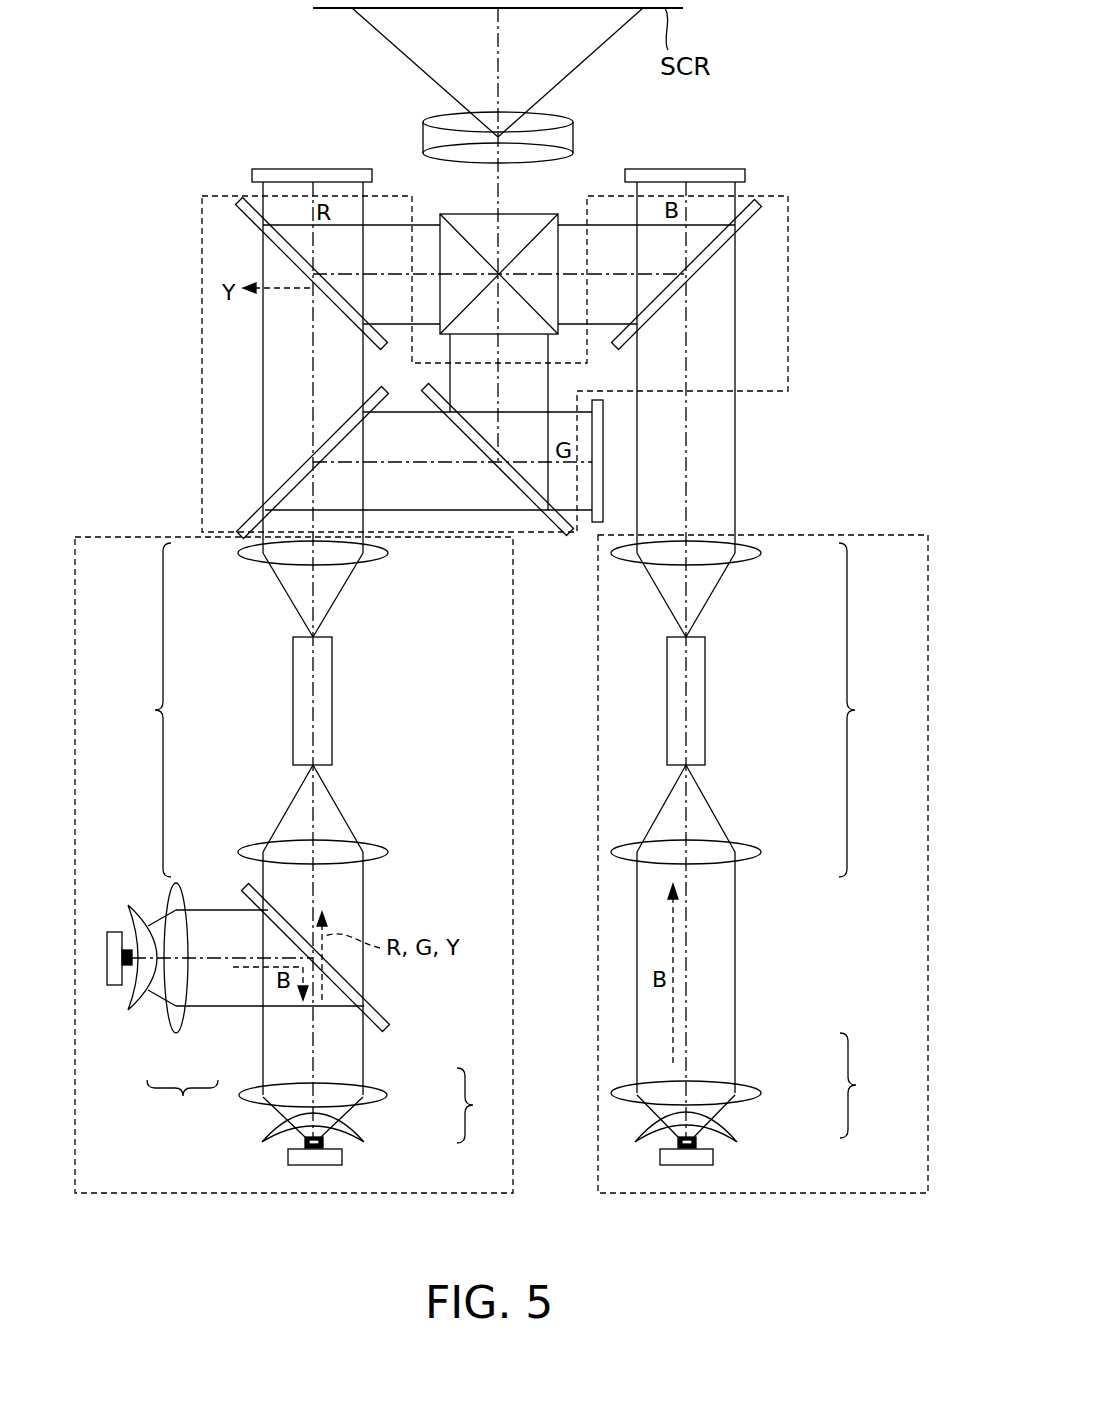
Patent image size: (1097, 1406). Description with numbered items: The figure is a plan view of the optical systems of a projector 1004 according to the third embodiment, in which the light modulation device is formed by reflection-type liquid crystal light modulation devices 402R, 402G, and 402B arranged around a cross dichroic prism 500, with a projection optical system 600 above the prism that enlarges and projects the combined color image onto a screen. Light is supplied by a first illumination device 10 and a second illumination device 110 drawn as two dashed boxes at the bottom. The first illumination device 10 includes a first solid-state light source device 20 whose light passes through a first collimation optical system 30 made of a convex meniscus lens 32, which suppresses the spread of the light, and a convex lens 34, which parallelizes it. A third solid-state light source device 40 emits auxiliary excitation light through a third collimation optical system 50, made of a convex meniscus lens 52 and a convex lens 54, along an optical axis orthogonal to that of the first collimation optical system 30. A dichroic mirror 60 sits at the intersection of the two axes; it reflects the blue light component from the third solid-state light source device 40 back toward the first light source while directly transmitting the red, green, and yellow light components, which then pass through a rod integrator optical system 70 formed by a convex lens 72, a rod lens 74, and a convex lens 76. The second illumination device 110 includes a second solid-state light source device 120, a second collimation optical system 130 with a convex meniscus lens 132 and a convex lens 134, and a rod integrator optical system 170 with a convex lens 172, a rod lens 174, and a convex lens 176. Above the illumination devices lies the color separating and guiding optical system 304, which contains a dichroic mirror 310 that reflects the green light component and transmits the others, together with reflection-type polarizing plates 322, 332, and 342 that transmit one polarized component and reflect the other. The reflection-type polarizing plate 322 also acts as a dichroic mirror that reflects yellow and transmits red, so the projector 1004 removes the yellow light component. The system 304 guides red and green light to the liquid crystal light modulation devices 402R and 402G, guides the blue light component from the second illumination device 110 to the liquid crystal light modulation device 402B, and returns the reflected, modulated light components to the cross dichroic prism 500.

The projector 1004 is at (877, 24).
The projection optical system 600 is at (423, 130).
The reflection-type liquid crystal light modulation device 402R is at (270, 168).
The reflection-type liquid crystal light modulation device 402B is at (676, 168).
The reflection-type liquid crystal light modulation device 402G is at (600, 522).
The cross dichroic prism 500 is at (525, 213).
The color separating and guiding optical system 304 is at (202, 360).
The reflection-type polarizing plate 322 is at (245, 212).
The reflection-type polarizing plate 342 is at (748, 228).
The dichroic mirror 310 is at (243, 520).
The reflection-type polarizing plate 332 is at (540, 520).
The first illumination device 10 is at (197, 1195).
The second illumination device 110 is at (728, 1195).
The rod integrator optical system 70 is at (250, 709).
The convex lens 76 is at (238, 554).
The rod lens 74 is at (293, 680).
The convex lens 72 is at (238, 852).
The rod integrator optical system 170 is at (760, 709).
The convex lens 176 is at (763, 553).
The rod lens 174 is at (706, 680).
The convex lens 172 is at (763, 852).
The dichroic mirror 60 is at (388, 1008).
The third solid-state light source device 40 is at (119, 1003).
The third collimation optical system 50 is at (175, 1005).
The convex meniscus lens 52 is at (140, 1007).
The convex lens 54 is at (178, 1033).
The first collimation optical system 30 is at (374, 1107).
The convex lens 34 is at (389, 1093).
The convex meniscus lens 32 is at (362, 1128).
The first solid-state light source device 20 is at (268, 1156).
The second collimation optical system 130 is at (761, 1089).
The convex lens 134 is at (763, 1090).
The convex meniscus lens 132 is at (736, 1128).
The second solid-state light source device 120 is at (736, 1153).